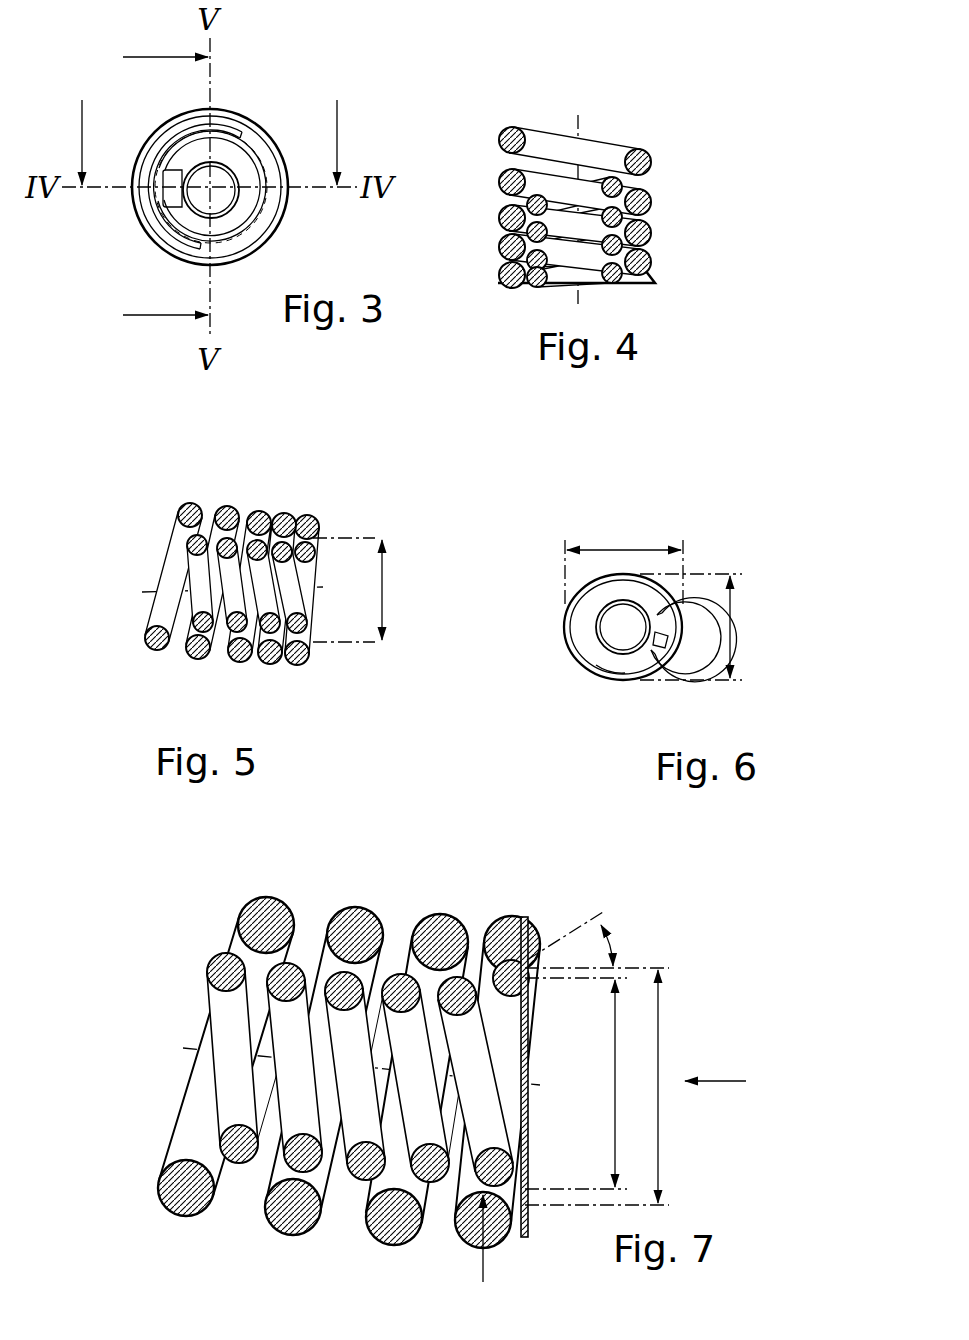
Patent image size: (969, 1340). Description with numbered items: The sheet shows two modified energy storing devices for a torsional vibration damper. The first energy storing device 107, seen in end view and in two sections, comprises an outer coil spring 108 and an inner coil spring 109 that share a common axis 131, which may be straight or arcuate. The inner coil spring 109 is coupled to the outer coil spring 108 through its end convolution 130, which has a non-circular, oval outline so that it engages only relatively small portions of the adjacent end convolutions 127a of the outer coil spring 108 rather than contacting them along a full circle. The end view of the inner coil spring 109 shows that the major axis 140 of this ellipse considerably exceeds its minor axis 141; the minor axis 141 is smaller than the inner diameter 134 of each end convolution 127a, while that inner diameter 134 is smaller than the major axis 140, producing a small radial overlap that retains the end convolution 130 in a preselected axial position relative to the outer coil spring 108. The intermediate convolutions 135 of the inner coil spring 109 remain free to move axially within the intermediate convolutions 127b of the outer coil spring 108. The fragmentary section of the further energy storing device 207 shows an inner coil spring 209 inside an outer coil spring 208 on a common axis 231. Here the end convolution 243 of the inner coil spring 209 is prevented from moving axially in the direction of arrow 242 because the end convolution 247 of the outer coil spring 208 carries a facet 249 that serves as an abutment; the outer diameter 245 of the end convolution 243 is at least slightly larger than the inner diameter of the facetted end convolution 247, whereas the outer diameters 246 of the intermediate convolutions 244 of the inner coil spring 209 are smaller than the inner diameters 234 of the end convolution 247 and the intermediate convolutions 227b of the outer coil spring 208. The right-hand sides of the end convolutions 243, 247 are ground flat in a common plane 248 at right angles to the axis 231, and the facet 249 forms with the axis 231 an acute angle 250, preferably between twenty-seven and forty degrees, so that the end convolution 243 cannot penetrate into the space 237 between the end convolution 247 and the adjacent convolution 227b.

In FIG. 3, the energy storing device 107 is at (264, 120).
In FIG. 4, the energy storing device 107 is at (668, 217).
In FIG. 5, the energy storing device 107 is at (221, 666).
In FIG. 3, the outer coil spring 108 is at (153, 155).
In FIG. 4, the outer coil spring 108 is at (499, 140).
In FIG. 5, the outer coil spring 108 is at (230, 508).
In FIG. 3, the inner coil spring 109 is at (193, 150).
In FIG. 4, the inner coil spring 109 is at (528, 205).
In FIG. 5, the inner coil spring 109 is at (197, 630).
In FIG. 6, the inner coil spring 109 is at (607, 682).
In FIG. 4, the end convolution 127a is at (652, 272).
In FIG. 5, the end convolution 127a is at (301, 664).
In FIG. 4, the intermediate convolution 127b is at (650, 156).
In FIG. 5, the intermediate convolution 127b is at (190, 507).
In FIG. 4, the end convolution 130 is at (652, 240).
In FIG. 5, the end convolution 130 is at (313, 572).
In FIG. 6, the end convolution 130 is at (637, 676).
In FIG. 3, the common axis 131 is at (158, 240).
In FIG. 4, the common axis 131 is at (585, 125).
In FIG. 5, the common axis 131 is at (140, 593).
In FIG. 5, the inner diameter 134 is at (386, 588).
In FIG. 4, the intermediate convolution 135 is at (624, 186).
In FIG. 5, the intermediate convolution 135 is at (200, 538).
In FIG. 6, the major axis 140 is at (622, 548).
In FIG. 6, the minor axis 141 is at (733, 625).
In FIG. 7, the energy storing device 207 is at (316, 902).
In FIG. 7, the outer coil spring 208 is at (291, 1225).
In FIG. 7, the inner coil spring 209 is at (288, 1153).
In FIG. 7, the intermediate convolution 227b is at (388, 1237).
In FIG. 7, the common axis 231 is at (198, 1050).
In FIG. 7, the inner diameters 234 is at (483, 1265).
In FIG. 7, the space 237 is at (474, 958).
In FIG. 7, the arrow 242 is at (718, 1081).
In FIG. 7, the end convolution 243 is at (528, 992).
In FIG. 7, the intermediate convolution 244 is at (217, 973).
In FIG. 7, the outer diameter 245 is at (658, 1135).
In FIG. 7, the outer diameter 246 is at (613, 1094).
In FIG. 7, the end convolution 247 is at (516, 917).
In FIG. 7, the common plane 248 is at (530, 1063).
In FIG. 7, the facet 249 is at (527, 952).
In FIG. 7, the acute angle 250 is at (613, 940).